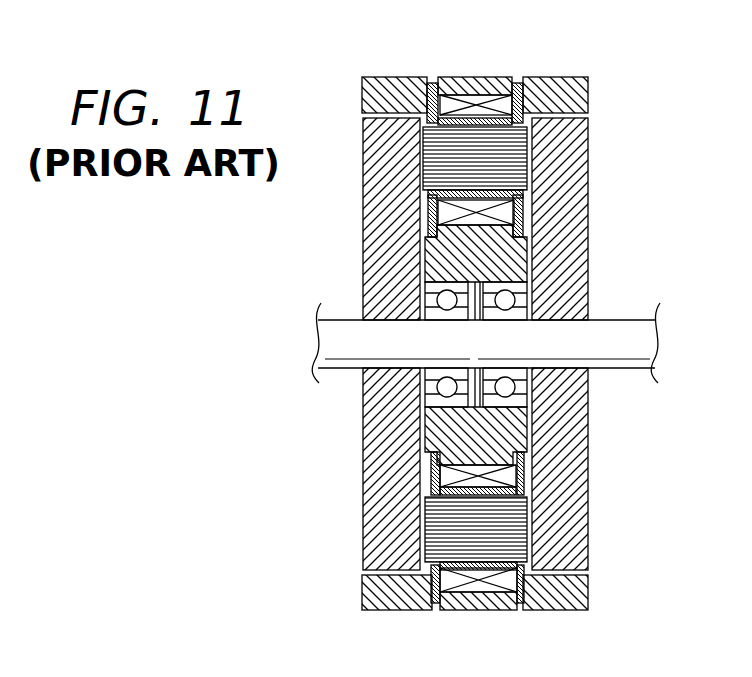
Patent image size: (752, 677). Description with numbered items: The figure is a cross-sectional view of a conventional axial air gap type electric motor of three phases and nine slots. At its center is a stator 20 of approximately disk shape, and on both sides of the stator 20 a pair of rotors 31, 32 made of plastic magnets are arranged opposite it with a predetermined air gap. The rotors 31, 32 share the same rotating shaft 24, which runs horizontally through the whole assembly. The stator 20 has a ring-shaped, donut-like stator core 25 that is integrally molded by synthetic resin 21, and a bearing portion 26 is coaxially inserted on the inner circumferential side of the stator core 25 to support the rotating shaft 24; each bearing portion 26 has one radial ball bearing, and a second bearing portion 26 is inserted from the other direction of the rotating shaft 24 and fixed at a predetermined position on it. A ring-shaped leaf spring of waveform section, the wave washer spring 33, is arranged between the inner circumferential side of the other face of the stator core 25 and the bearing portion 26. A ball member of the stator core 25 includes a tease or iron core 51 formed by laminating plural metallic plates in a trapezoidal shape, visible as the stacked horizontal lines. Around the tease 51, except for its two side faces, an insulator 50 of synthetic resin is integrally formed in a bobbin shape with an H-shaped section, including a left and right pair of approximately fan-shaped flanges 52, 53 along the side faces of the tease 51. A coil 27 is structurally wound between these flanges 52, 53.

The stator 20 is at (511, 333).
The synthetic resin 21 is at (577, 78).
The rotating shaft 24 is at (645, 343).
The stator core 25 is at (475, 339).
The bearing portion 26 is at (418, 400).
The coil 27 is at (466, 78).
The rotor 31 is at (583, 202).
The rotor 32 is at (377, 210).
The wave washer spring 33 is at (485, 286).
The insulator 50 is at (505, 543).
The tease (iron core) 51 is at (478, 347).
The flange 52 is at (420, 593).
The flange 53 is at (538, 597).